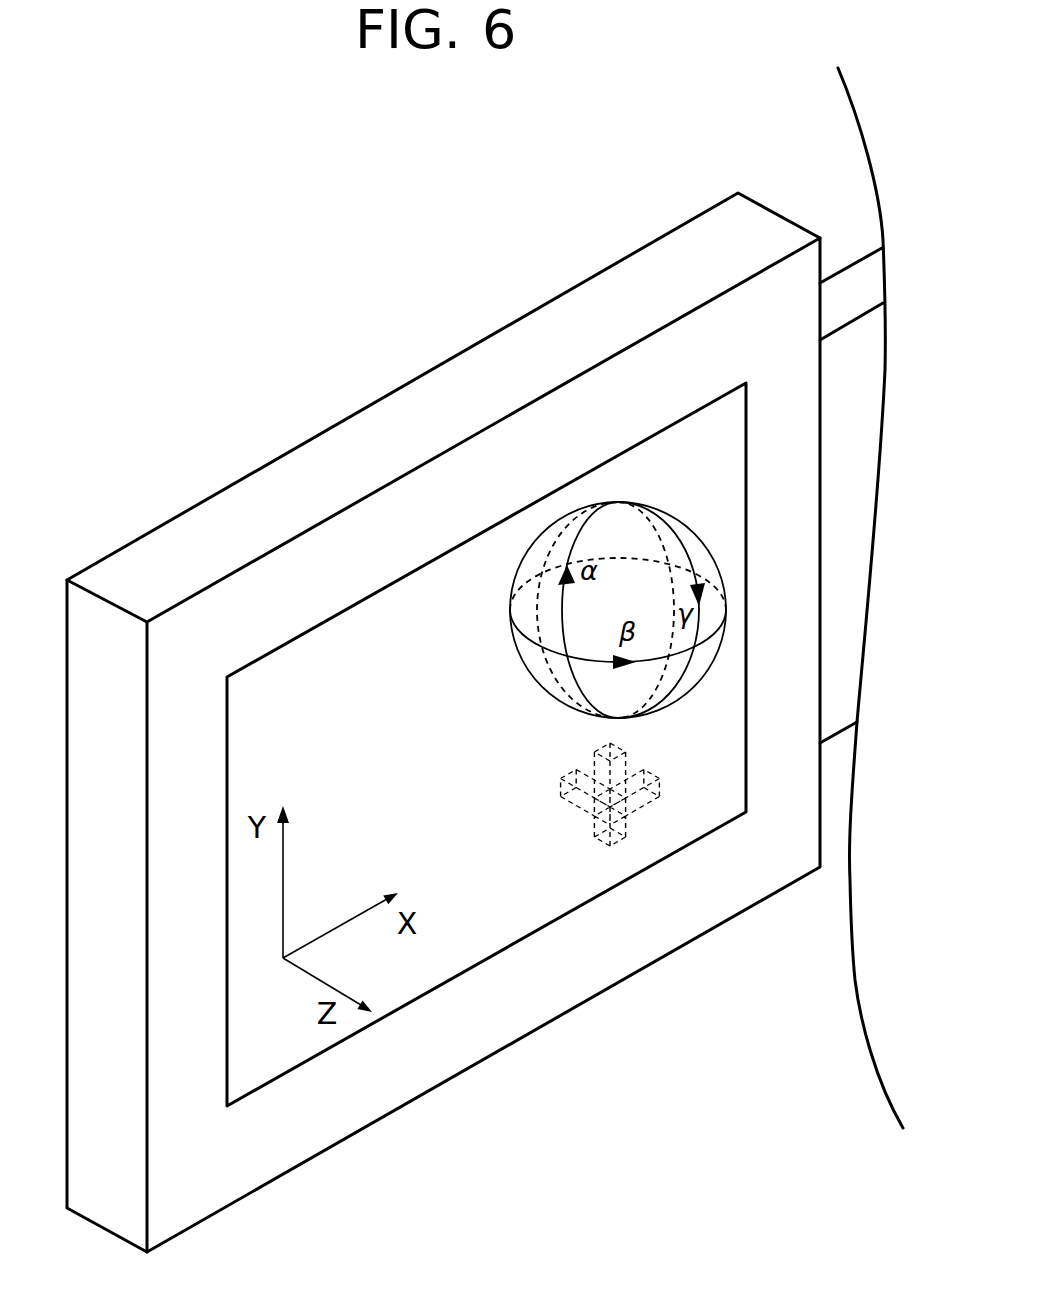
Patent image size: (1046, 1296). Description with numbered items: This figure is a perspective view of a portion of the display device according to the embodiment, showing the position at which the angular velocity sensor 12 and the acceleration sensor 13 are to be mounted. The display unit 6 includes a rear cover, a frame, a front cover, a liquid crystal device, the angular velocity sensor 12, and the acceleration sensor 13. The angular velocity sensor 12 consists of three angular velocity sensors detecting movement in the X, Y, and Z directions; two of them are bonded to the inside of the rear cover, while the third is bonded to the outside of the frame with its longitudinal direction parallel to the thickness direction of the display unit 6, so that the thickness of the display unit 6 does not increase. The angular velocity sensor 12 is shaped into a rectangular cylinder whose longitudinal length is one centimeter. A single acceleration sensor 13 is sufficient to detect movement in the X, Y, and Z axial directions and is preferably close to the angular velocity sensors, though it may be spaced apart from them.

The display unit 6 is at (476, 562).
The angular velocity sensor 12 is at (688, 909).
The acceleration sensor 13 is at (633, 837).